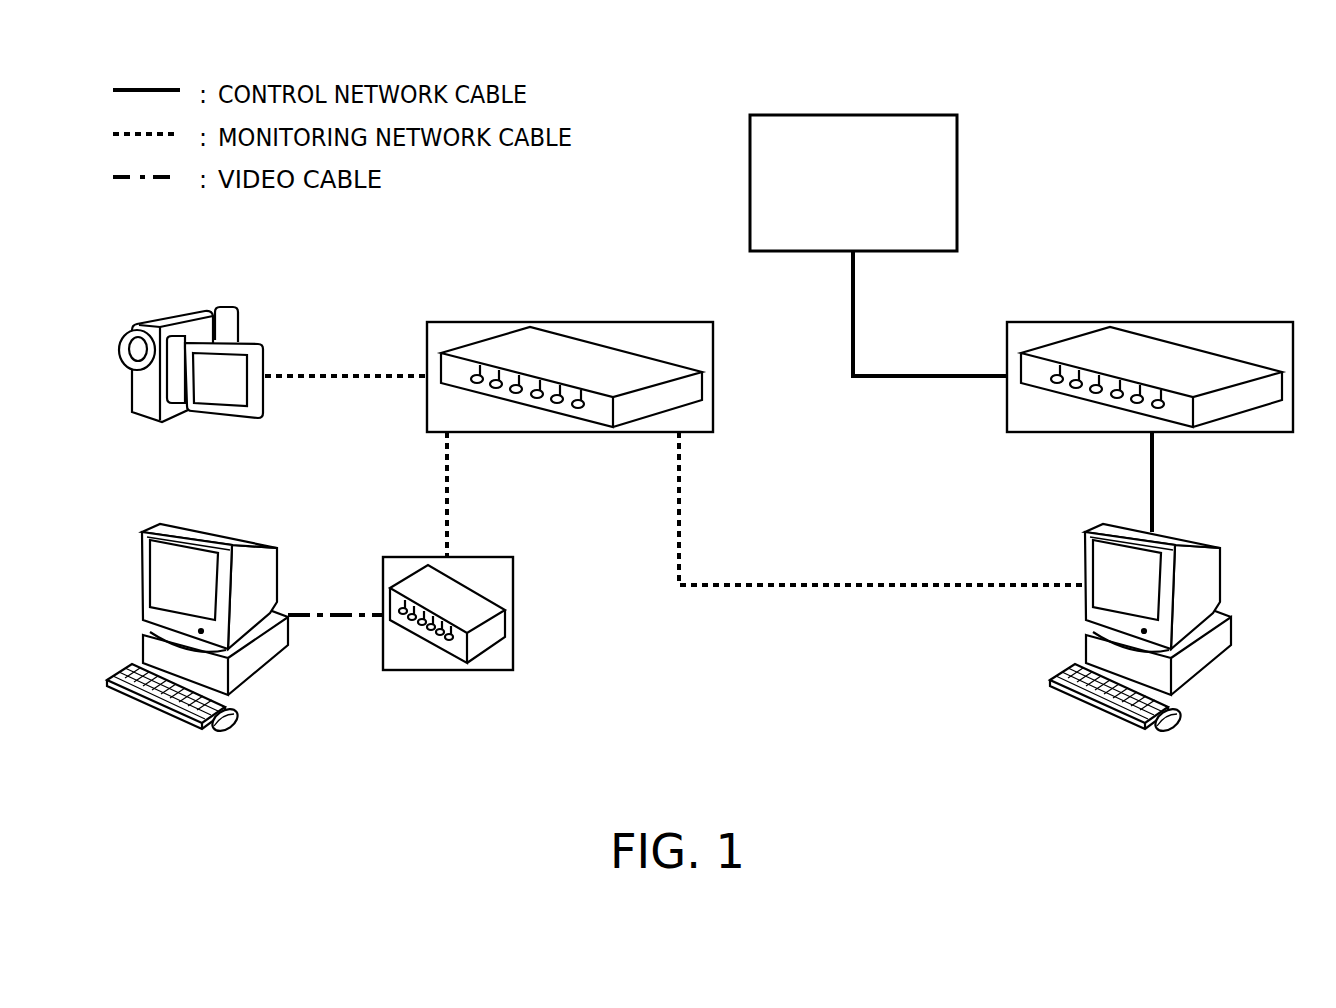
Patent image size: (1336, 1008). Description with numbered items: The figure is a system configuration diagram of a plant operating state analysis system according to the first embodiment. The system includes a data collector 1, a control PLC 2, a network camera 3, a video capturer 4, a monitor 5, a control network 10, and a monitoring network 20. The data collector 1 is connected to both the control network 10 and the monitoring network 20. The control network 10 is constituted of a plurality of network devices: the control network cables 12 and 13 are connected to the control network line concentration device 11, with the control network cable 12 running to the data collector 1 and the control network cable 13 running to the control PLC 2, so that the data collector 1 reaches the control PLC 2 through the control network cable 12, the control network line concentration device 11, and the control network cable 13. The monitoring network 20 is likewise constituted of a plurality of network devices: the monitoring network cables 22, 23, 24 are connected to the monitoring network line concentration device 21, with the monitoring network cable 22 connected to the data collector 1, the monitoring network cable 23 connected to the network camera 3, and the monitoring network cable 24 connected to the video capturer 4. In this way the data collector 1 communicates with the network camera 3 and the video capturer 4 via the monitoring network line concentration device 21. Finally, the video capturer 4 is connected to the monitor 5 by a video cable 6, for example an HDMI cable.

The data collector 1 is at (1222, 570).
The control PLC 2 is at (855, 115).
The network camera 3 is at (190, 312).
The video capturer 4 is at (513, 628).
The monitor 5 is at (226, 530).
The video cable 6 is at (340, 613).
The control network 10 is at (1237, 255).
The control network line concentration device 11 is at (1068, 432).
The control network cable 12 is at (1153, 492).
The control network cable 13 is at (942, 380).
The monitoring network 20 is at (648, 275).
The monitoring network line concentration device 21 is at (445, 322).
The monitoring network cable 22 is at (907, 590).
The monitoring network cable 23 is at (355, 376).
The monitoring network cable 24 is at (445, 510).